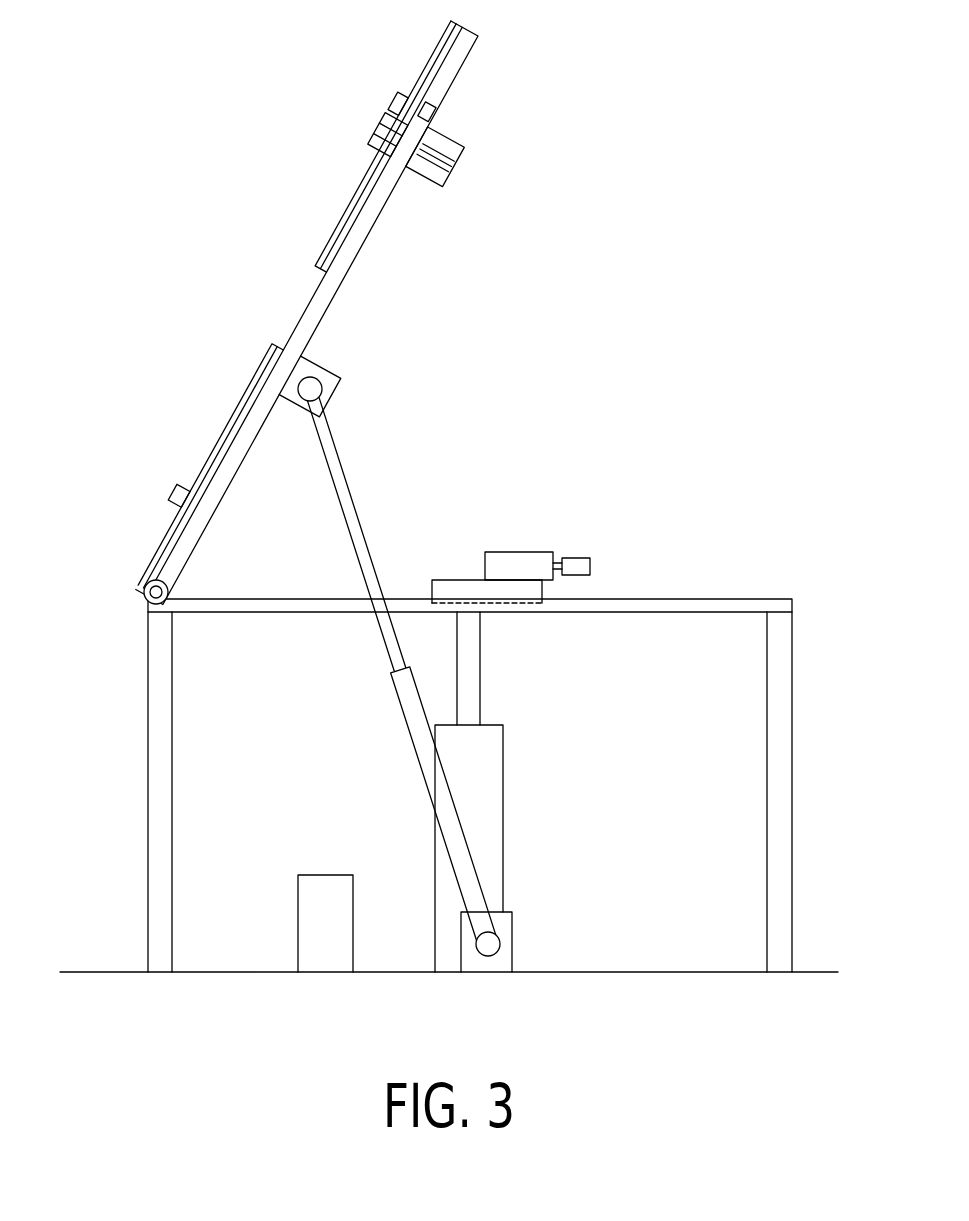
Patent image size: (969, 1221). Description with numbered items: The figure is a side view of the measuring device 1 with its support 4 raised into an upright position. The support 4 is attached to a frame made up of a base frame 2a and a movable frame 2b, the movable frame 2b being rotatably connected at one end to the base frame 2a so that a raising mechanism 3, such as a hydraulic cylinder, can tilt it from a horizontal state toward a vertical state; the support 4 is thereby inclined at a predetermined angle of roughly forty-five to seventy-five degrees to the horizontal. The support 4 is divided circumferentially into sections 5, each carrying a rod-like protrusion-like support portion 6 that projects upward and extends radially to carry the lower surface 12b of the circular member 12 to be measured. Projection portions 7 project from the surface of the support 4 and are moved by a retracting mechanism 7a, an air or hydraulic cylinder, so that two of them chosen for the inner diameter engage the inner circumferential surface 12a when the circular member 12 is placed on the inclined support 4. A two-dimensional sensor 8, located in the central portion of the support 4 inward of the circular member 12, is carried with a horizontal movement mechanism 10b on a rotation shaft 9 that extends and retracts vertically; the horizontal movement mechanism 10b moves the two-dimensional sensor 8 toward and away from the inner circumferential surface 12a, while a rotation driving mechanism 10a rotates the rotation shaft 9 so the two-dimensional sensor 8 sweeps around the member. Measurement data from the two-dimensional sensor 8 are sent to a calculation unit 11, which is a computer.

The measuring device 1 is at (740, 506).
The base frame 2a is at (267, 600).
The movable frame 2b is at (316, 317).
The raising mechanism 3 is at (412, 735).
The support 4 is at (343, 243).
The sections 5 is at (217, 443).
The protrusion-like support portion 6 is at (353, 197).
The projection portions 7 is at (390, 128).
The retracting mechanism 7a is at (455, 145).
The two-dimensional sensor 8 is at (576, 558).
The rotation shaft 9 is at (472, 682).
The rotation driving mechanism 10a is at (488, 813).
The horizontal movement mechanism 10b is at (521, 556).
The calculation unit 11 is at (310, 917).
The circular member 12 is at (402, 96).
The inner circumferential surface 12a is at (390, 117).
The lower surface 12b is at (428, 112).